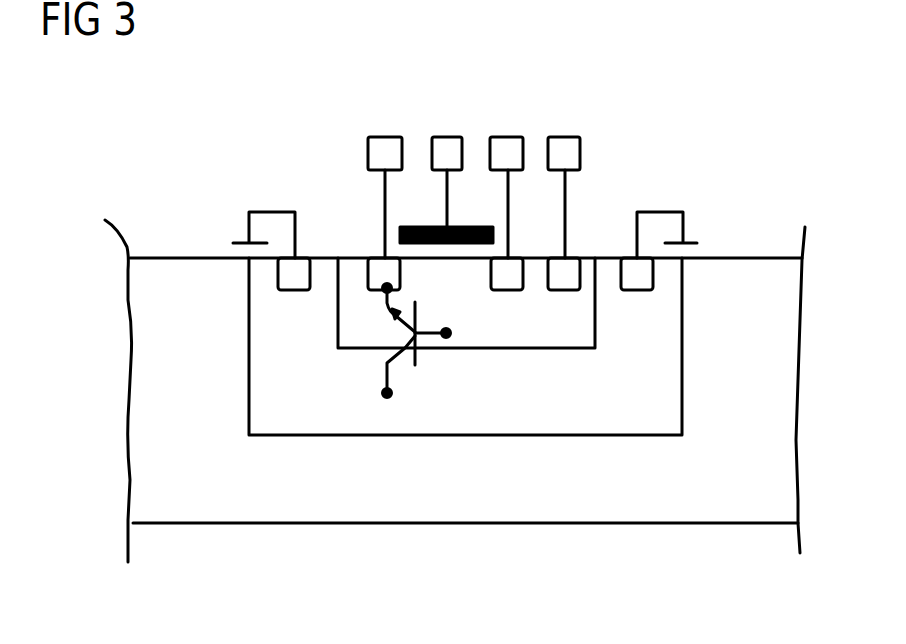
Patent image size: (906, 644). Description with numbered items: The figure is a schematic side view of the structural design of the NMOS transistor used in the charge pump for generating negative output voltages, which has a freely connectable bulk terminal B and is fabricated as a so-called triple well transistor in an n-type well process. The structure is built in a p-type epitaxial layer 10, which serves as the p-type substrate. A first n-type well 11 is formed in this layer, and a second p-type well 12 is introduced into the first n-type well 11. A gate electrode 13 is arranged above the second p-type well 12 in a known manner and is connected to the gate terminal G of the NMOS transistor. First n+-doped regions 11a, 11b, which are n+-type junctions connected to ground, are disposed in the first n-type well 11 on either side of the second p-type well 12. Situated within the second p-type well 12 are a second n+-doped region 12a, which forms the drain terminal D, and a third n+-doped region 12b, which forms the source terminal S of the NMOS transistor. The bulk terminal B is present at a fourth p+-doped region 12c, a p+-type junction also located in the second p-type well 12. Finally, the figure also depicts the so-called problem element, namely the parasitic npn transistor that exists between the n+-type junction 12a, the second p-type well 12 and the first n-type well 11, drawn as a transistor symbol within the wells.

The p-type epitaxial layer 10 is at (194, 505).
The first n-type well 11 is at (278, 423).
The first n+-doped region 11a is at (278, 265).
The first n+-doped region 11b is at (653, 280).
The second p-type well 12 is at (366, 338).
The second n+-doped region 12a is at (377, 258).
The third n+-doped region 12b is at (516, 257).
The fourth p+-doped region 12c is at (583, 257).
The gate electrode 13 is at (475, 227).